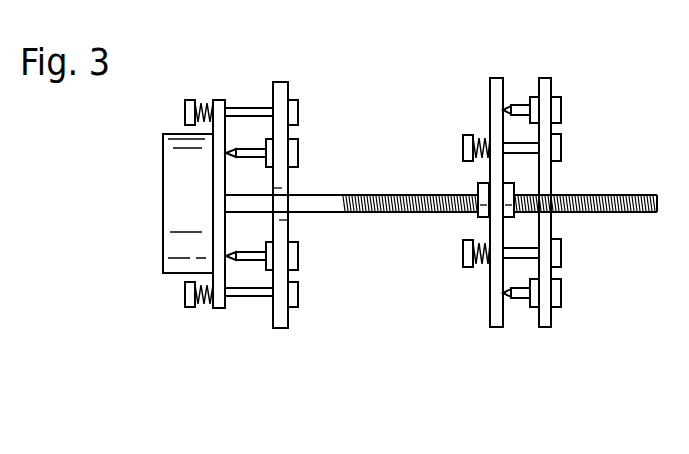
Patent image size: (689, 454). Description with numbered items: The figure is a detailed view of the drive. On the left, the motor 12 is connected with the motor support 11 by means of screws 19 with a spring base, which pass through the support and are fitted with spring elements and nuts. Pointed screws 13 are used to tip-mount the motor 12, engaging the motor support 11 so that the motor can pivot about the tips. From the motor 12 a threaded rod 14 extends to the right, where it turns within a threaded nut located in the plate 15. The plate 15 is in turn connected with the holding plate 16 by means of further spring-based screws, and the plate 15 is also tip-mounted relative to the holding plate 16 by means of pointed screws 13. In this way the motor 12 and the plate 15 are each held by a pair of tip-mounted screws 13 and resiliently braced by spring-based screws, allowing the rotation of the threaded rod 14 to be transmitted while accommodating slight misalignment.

The motor support 11 is at (288, 178).
The motor 12 is at (178, 195).
The screws 13 is at (253, 145).
The threaded rod 14 is at (400, 212).
The plate 15 is at (493, 77).
The holding plate 16 is at (545, 232).
The screws with a spring base 19 is at (237, 110).